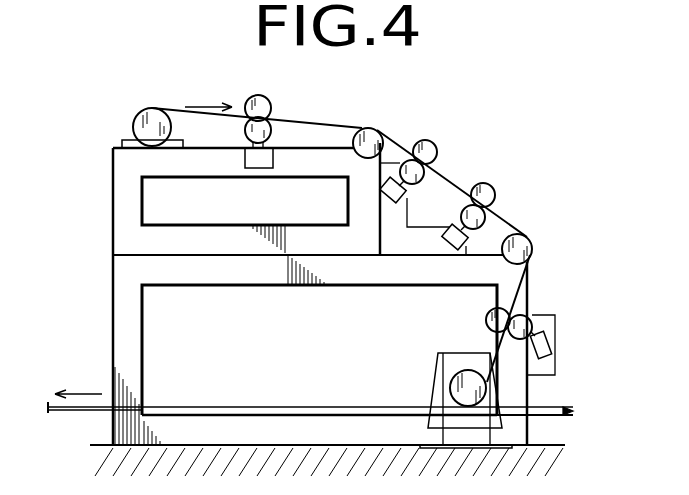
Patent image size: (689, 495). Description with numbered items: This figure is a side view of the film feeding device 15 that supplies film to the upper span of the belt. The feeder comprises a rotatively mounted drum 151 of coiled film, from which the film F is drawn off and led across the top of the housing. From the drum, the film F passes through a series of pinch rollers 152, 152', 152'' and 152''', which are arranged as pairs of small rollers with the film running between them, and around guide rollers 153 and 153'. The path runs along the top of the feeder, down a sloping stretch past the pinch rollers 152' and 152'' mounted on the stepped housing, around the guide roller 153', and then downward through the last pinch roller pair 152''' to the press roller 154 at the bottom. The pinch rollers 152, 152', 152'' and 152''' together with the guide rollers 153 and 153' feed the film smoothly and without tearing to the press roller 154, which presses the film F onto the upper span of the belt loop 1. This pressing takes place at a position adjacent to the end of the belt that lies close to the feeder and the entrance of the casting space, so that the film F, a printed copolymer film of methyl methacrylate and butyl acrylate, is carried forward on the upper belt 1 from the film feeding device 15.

The film feeding device 15 is at (328, 350).
The belt loop 1 is at (172, 405).
The film F is at (331, 122).
The drum of coiled film 151 is at (147, 109).
The pinch roller 152 is at (275, 115).
The guide roller 153 is at (380, 120).
The pinch roller 152' is at (423, 162).
The pinch roller 152'' is at (487, 199).
The guide roller 153' is at (532, 230).
The pinch roller 152''' is at (536, 323).
The press roller 154 is at (482, 390).